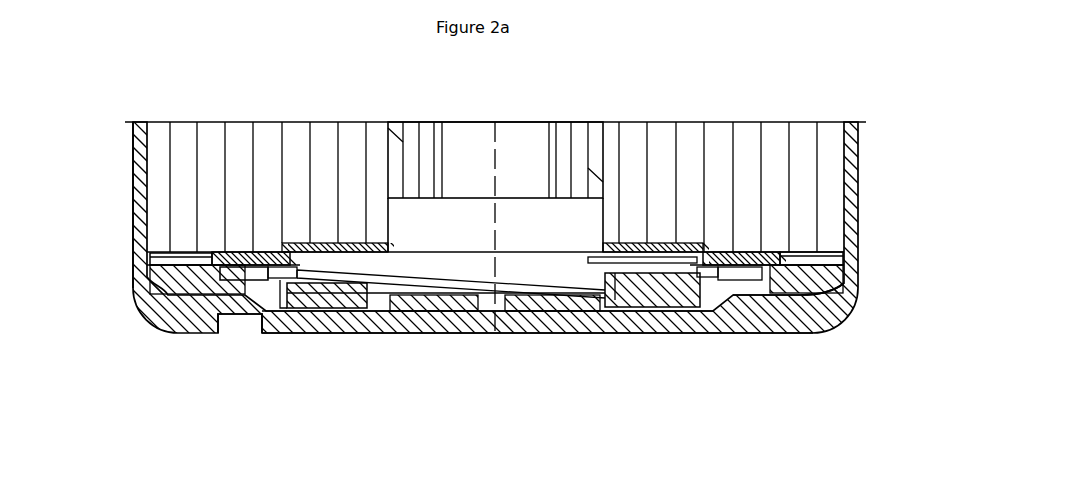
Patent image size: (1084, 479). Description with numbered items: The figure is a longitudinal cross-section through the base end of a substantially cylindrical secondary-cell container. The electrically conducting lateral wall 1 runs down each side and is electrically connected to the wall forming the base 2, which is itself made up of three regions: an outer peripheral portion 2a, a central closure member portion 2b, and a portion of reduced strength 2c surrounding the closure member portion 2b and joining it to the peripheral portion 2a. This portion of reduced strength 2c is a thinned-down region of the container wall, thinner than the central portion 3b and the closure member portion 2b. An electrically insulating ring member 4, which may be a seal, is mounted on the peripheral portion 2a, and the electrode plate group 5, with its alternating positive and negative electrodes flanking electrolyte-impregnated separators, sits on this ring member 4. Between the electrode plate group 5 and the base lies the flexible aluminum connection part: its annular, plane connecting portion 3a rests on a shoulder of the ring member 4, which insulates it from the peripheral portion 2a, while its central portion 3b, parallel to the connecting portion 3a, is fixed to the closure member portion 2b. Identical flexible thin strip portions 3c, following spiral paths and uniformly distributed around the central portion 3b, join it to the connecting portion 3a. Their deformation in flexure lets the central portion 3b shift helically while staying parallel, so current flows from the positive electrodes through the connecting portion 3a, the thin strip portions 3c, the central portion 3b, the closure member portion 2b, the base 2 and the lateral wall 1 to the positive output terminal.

The lateral wall 1 is at (131, 148).
The wall forming the base 2 is at (148, 331).
The peripheral portion 2a is at (794, 302).
The closure member portion 2b is at (643, 320).
The portion of reduced strength 2c is at (262, 312).
The connecting portion 3a is at (236, 272).
The central portion 3b is at (465, 300).
The thin strip portions 3c is at (346, 302).
The insulating ring member 4 is at (198, 276).
The electrode plate group 5 is at (668, 156).